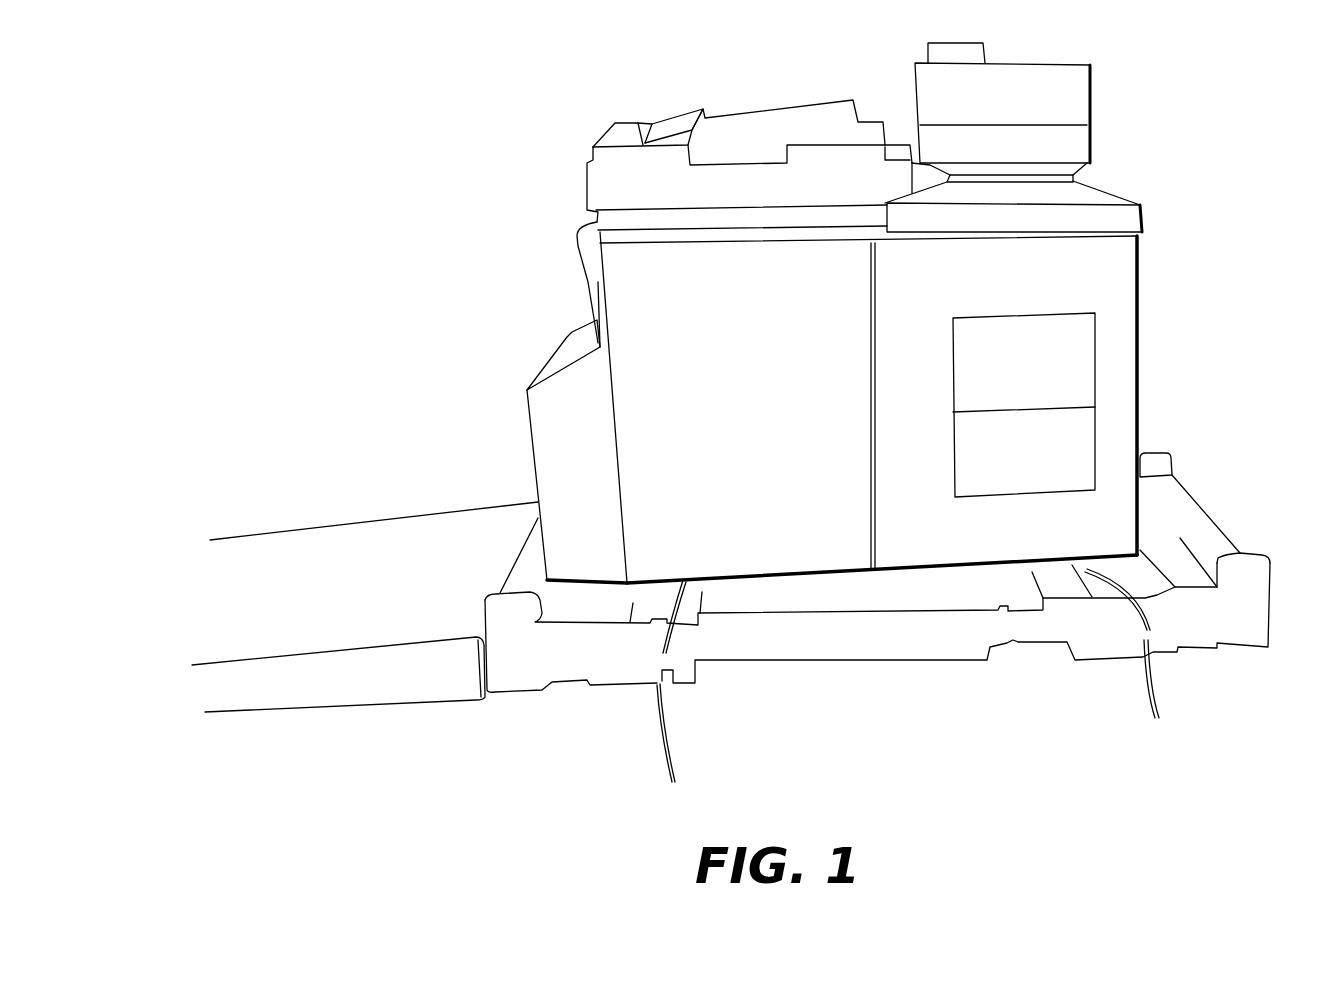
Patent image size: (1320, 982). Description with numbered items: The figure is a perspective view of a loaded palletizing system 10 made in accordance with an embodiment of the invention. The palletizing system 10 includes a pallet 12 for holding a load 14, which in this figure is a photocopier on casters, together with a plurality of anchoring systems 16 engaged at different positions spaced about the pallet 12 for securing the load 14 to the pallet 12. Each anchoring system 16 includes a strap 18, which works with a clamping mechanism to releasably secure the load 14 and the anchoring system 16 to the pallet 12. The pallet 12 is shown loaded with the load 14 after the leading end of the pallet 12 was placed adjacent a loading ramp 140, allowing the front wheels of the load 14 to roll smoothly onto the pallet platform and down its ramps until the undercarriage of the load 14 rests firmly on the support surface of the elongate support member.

The palletizing system 10 is at (446, 157).
The pallet 12 is at (846, 690).
The load 14 is at (710, 411).
The anchoring system 16 is at (678, 757).
The strap 18 is at (657, 711).
The loading ramp 140 is at (370, 712).